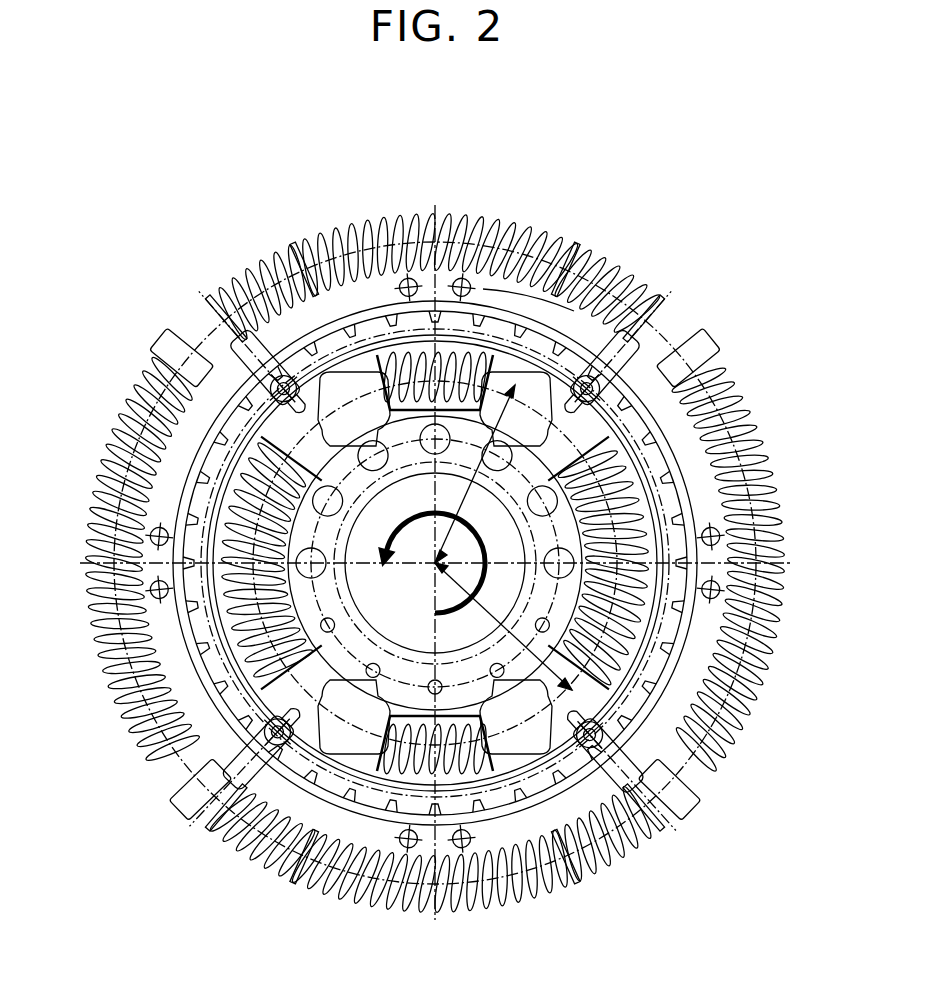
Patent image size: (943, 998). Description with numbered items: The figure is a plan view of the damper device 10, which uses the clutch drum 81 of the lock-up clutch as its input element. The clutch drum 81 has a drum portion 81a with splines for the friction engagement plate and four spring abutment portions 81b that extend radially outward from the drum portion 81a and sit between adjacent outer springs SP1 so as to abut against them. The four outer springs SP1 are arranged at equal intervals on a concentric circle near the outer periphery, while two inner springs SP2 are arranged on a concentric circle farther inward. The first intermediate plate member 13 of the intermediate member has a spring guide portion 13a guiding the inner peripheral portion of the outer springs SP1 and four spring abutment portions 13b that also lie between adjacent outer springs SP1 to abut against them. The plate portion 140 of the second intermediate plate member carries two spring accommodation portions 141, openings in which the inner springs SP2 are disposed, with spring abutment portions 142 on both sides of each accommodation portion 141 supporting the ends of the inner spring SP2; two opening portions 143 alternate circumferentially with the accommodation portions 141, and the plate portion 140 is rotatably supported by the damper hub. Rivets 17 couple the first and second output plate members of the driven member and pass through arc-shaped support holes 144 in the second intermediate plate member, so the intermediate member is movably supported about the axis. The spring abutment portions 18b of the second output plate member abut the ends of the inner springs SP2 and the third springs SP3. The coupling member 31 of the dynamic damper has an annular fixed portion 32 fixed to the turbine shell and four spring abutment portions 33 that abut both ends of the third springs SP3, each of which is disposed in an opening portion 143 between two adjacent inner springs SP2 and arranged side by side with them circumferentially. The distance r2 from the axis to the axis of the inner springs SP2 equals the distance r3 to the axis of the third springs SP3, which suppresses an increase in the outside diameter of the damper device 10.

The damper device 10 is at (715, 255).
The first intermediate plate member 13 is at (733, 653).
The spring guide portion 13a is at (403, 858).
The spring abutment portion 13b is at (160, 344).
The rivet 17 is at (278, 384).
The spring abutment portion 18b is at (310, 262).
The coupling member 31 is at (203, 807).
The fixed portion 32 is at (571, 589).
The spring abutment portion 33 is at (375, 758).
The clutch drum 81 is at (487, 292).
The drum portion 81a is at (516, 300).
The spring abutment portion 81b is at (215, 300).
The plate portion 140 is at (378, 506).
The spring accommodation portion 141 is at (226, 538).
The spring abutment portion 142 is at (298, 457).
The opening portion 143 is at (601, 441).
The support hole 144 is at (178, 348).
The outer spring SP1 is at (416, 216).
The inner spring SP2 is at (601, 521).
The third spring SP3 is at (353, 378).
The distance r2 is at (503, 626).
The distance r3 is at (475, 474).